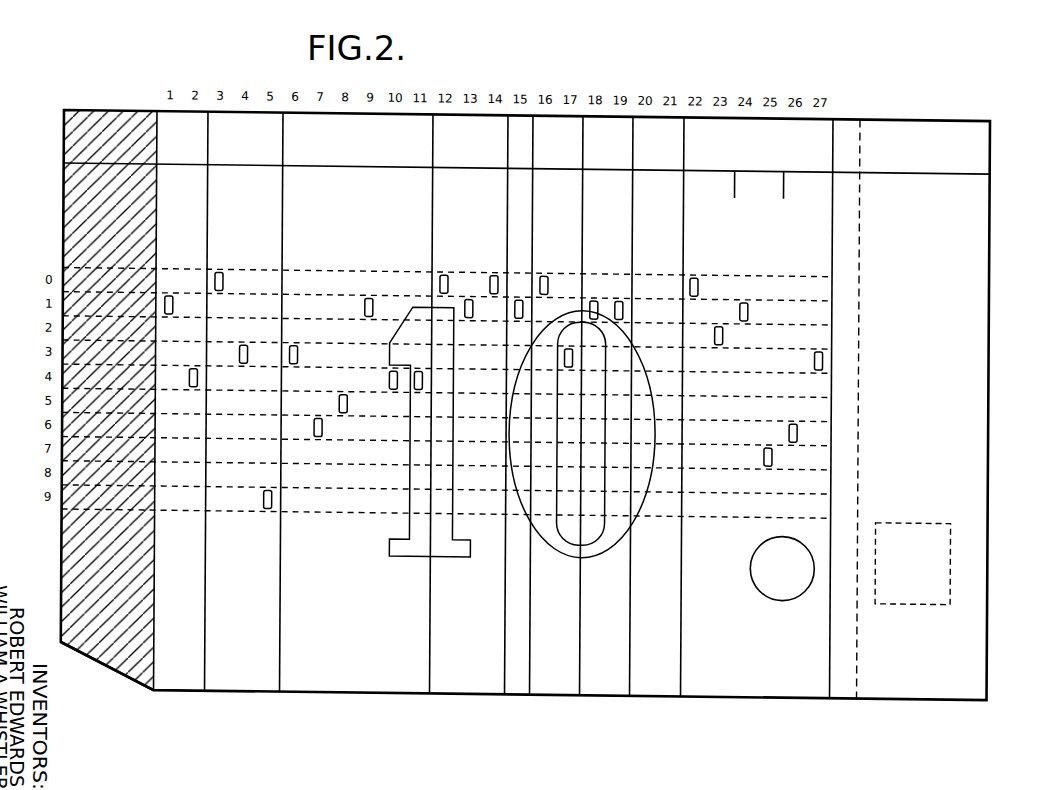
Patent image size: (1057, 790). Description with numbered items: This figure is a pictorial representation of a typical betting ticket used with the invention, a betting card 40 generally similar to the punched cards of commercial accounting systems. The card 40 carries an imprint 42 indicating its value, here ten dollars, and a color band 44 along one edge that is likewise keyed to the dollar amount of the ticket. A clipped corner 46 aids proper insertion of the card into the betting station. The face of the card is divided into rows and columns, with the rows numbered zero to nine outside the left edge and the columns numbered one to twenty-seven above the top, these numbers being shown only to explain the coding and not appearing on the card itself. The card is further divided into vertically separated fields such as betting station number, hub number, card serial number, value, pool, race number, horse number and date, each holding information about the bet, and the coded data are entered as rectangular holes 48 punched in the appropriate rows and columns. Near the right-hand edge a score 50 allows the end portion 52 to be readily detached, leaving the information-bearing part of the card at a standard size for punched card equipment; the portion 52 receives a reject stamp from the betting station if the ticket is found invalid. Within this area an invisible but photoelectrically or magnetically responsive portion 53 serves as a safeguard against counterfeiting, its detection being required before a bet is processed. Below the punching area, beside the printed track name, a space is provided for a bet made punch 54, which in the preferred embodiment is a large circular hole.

The betting card 40 is at (354, 690).
The imprint 42 is at (405, 546).
The color band 44 is at (78, 545).
The clipped corner 46 is at (106, 665).
The rectangular holes 48 is at (471, 296).
The score 50 is at (862, 143).
The detachable portion 52 is at (983, 280).
The photoelectrically or magnetically responsive portion 53 is at (951, 558).
The bet made punch 54 is at (788, 590).